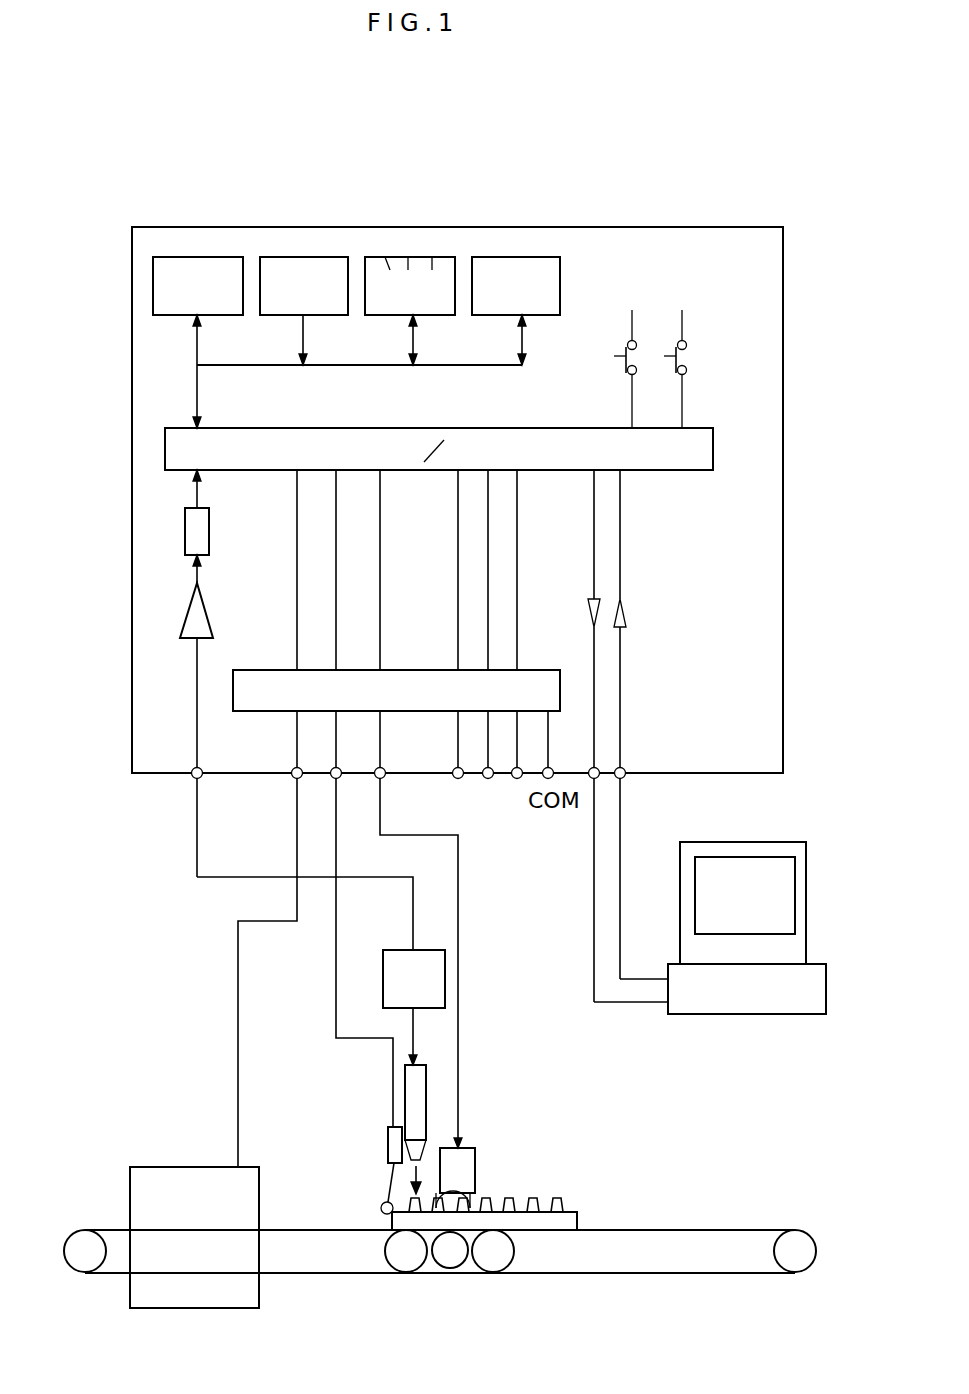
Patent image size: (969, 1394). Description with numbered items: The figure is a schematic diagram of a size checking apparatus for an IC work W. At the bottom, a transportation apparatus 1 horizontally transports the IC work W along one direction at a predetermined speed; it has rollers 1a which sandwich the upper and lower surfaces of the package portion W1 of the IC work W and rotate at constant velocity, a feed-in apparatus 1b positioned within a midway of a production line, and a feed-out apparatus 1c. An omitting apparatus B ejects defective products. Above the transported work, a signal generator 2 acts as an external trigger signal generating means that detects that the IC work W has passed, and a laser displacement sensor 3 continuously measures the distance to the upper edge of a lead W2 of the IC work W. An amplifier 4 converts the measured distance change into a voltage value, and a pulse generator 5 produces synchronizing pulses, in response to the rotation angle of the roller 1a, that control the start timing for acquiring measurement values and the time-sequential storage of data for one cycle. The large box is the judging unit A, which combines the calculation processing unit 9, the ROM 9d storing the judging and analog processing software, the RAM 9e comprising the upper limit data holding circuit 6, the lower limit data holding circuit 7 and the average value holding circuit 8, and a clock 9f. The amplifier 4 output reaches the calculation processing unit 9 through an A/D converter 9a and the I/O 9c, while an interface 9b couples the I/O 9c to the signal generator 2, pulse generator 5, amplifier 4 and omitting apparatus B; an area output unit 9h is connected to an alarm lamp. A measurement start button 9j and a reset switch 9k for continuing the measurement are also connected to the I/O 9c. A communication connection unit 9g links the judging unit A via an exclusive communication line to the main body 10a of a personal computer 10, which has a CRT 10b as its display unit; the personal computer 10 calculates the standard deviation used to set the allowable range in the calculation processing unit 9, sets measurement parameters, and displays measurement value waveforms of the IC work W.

The judging unit A is at (648, 228).
The calculation processing unit 9 is at (198, 250).
The ROM 9d is at (301, 250).
The RAM 9e is at (458, 164).
The upper limit data holding circuit 6 is at (384, 247).
The lower limit data holding circuit 7 is at (408, 248).
The average value holding circuit 8 is at (432, 248).
The clock 9f is at (514, 248).
The measurement start button 9j is at (626, 346).
The reset switch 9k is at (676, 346).
The I/O 9c is at (446, 428).
The A/D converter 9a is at (185, 531).
The interface 9b is at (410, 670).
The area output unit 9h is at (546, 805).
The communication connection unit 9g is at (605, 786).
The personal computer 10 is at (759, 922).
The main body 10a is at (762, 1002).
The CRT 10b is at (748, 868).
The amplifier 4 is at (392, 984).
The laser displacement sensor 3 is at (428, 1076).
The signal generator 2 is at (392, 1148).
The pulse generator 5 is at (465, 1152).
The roller 1a is at (456, 1194).
The IC work W is at (582, 1208).
The package portion W1 is at (392, 1223).
The lead W2 is at (558, 1196).
The transportation apparatus 1 is at (440, 1242).
The feed-in apparatus 1b is at (738, 1230).
The feed-out apparatus 1c is at (108, 1230).
The omitting apparatus B is at (170, 1158).